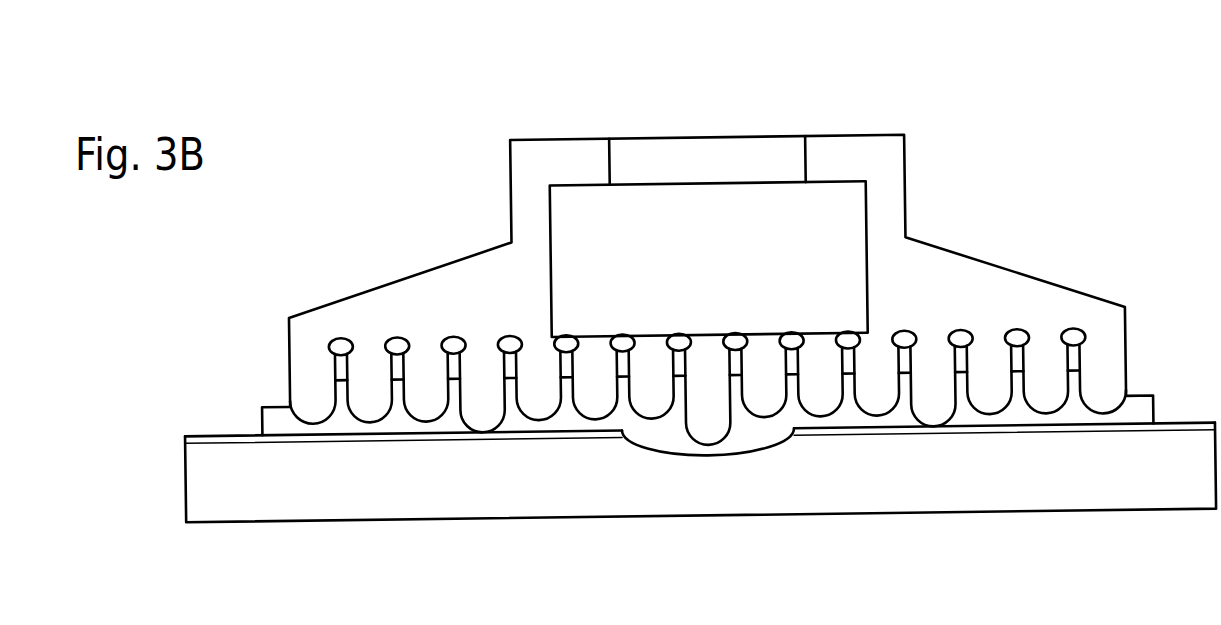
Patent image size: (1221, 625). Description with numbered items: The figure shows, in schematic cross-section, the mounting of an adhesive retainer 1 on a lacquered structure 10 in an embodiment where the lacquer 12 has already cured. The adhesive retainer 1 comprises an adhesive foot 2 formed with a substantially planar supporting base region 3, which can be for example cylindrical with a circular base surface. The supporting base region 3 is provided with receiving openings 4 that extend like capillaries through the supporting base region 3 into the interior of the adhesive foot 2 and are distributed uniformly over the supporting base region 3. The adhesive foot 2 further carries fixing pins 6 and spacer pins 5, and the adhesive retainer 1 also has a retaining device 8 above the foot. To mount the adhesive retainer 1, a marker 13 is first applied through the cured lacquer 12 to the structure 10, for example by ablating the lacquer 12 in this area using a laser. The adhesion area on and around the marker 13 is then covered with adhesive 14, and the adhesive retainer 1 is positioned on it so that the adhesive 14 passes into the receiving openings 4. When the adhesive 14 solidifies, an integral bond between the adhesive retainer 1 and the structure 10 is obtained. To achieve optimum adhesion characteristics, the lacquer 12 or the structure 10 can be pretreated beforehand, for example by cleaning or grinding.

The adhesive retainer 1 is at (872, 89).
The adhesive foot 2 is at (943, 263).
The supporting base region 3 is at (1109, 385).
The receiving openings 4 is at (1017, 409).
The spacer pins 5 is at (480, 422).
The fixing pins 6 is at (707, 432).
The retaining device 8 is at (777, 153).
The structure 10 is at (199, 480).
The lacquer 12 is at (197, 430).
The marker 13 is at (740, 440).
The adhesive 14 is at (274, 409).